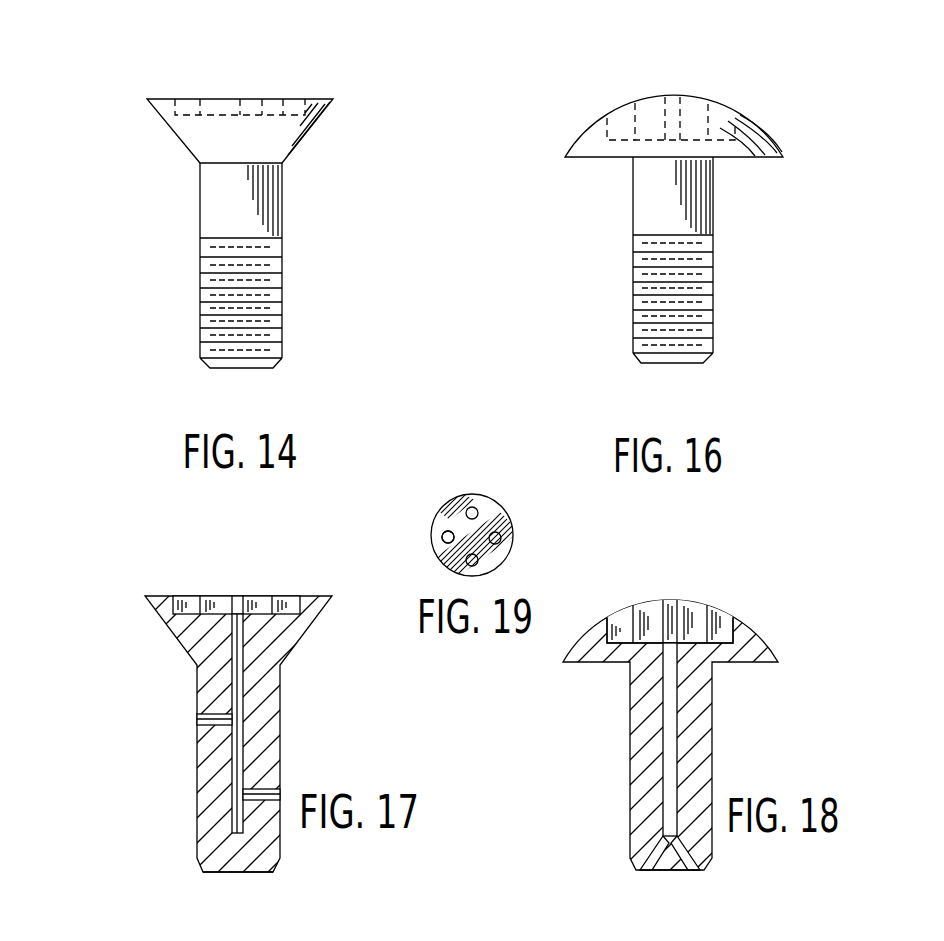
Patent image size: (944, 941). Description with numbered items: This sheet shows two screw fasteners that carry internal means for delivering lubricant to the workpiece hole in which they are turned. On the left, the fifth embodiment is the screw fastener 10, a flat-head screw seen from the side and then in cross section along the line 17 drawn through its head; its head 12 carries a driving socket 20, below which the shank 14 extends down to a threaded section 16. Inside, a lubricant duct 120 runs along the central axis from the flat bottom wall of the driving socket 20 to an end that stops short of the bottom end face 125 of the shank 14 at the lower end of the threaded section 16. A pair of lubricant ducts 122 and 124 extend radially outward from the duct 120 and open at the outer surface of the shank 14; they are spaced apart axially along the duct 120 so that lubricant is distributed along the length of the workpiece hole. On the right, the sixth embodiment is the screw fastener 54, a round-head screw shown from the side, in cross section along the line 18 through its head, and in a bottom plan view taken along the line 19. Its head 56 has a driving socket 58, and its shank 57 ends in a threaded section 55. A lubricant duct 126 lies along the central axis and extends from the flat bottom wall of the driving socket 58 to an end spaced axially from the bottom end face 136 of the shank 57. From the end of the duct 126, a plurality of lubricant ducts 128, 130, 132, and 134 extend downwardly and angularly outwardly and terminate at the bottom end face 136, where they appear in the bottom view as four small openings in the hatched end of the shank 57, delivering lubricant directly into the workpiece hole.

In FIG. 14, the screw fastener 10 is at (160, 252).
In FIG. 14, the head 12 is at (298, 140).
In FIG. 14, the shank 14 is at (282, 210).
In FIG. 14, the threaded section 16 is at (282, 325).
In FIG. 14, the section line 17— 17 is at (242, 99).
In FIG. 16, the section line 18— 18 is at (673, 95).
In FIG. 18, the section line 19- 19 is at (780, 885).
In FIG. 14, the driving socket 20 is at (260, 112).
In FIG. 16, the screw fastener 54 is at (624, 279).
In FIG. 16, the threaded section 55 is at (713, 328).
In FIG. 16, the head 56 is at (775, 140).
In FIG. 16, the shank 57 is at (713, 218).
In FIG. 16, the driving socket 58 is at (695, 120).
In FIG. 17, the lubricant duct 120 is at (234, 750).
In FIG. 17, the lubricant duct 122 is at (197, 718).
In FIG. 17, the lubricant duct 124 is at (280, 794).
In FIG. 17, the bottom end face 125 is at (228, 872).
In FIG. 18, the lubricant duct 126 is at (663, 752).
In FIG. 19, the lubricant duct 128 is at (479, 513).
In FIG. 18, the lubricant duct 128 is at (708, 845).
In FIG. 19, the lubricant duct 130 is at (501, 538).
In FIG. 19, the lubricant duct 132 is at (445, 565).
In FIG. 18, the lubricant duct 132 is at (650, 848).
In FIG. 19, the lubricant duct 134 is at (446, 533).
In FIG. 19, the bottom end face 136 is at (450, 500).
In FIG. 18, the bottom end face 136 is at (663, 870).